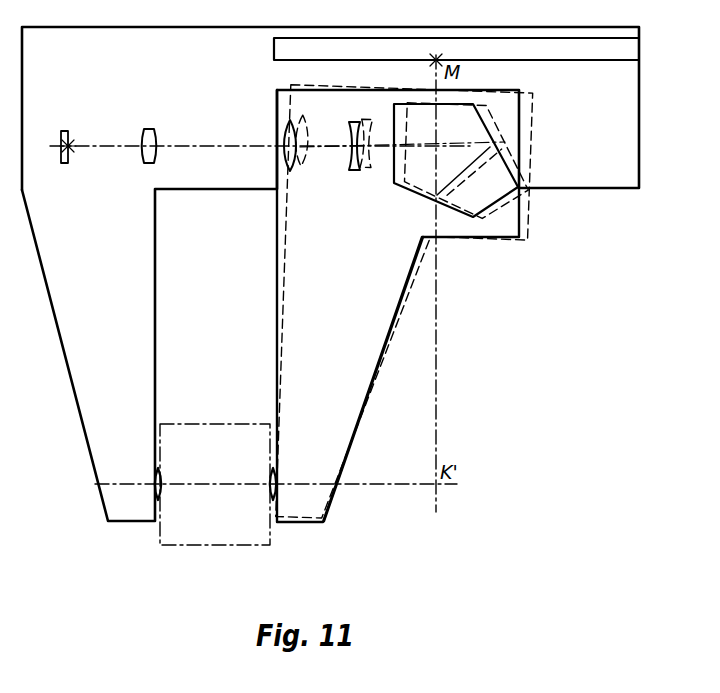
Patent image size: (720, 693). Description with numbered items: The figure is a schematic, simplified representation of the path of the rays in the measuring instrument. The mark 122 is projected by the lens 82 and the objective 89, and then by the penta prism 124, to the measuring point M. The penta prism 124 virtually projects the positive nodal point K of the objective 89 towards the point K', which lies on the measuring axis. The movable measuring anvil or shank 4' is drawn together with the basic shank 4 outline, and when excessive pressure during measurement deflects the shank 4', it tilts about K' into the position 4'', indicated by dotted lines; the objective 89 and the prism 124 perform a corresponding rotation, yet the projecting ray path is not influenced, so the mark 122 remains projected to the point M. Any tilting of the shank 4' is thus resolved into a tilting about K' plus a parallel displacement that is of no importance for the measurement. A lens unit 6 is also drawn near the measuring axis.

The housing 4 is at (330, 274).
The housing part 4' is at (398, 312).
The housing wall 4'' is at (377, 379).
The objective lens unit 6 is at (216, 547).
The lens 82 is at (148, 130).
The lens system 89 is at (352, 172).
The light source / reticle 122 is at (68, 160).
The prism 124 is at (396, 188).